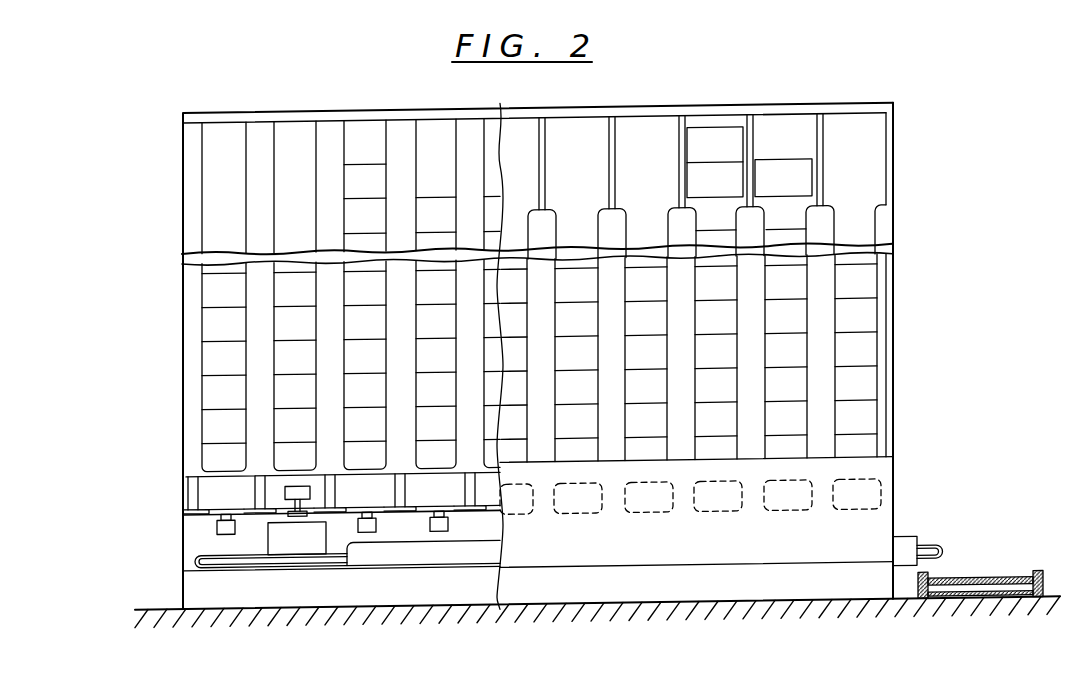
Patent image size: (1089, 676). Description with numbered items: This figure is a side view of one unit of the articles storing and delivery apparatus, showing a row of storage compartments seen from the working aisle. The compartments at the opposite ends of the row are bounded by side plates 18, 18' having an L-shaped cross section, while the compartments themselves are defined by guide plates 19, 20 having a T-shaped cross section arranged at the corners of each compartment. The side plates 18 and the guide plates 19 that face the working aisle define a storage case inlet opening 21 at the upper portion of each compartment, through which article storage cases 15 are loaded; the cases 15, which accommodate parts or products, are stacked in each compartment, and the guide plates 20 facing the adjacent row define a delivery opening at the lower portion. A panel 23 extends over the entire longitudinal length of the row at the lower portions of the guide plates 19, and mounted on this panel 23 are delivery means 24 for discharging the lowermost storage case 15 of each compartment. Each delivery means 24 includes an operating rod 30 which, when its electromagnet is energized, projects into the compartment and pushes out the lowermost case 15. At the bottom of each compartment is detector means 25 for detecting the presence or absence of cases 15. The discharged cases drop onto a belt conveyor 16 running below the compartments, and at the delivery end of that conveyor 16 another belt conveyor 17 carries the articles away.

The article storage case 15 is at (432, 214).
The belt conveyor 16 is at (197, 560).
The belt conveyor 17 is at (974, 592).
The side plate 18 is at (509, 356).
The side plate 18' is at (920, 350).
The guide plate 19 is at (547, 228).
The guide plate 20 is at (252, 208).
The storage case inlet opening 21 is at (568, 138).
The panel 23 is at (880, 526).
The delivery means 24 is at (591, 517).
The detector means 25 is at (217, 530).
The operating rod 30 is at (292, 496).